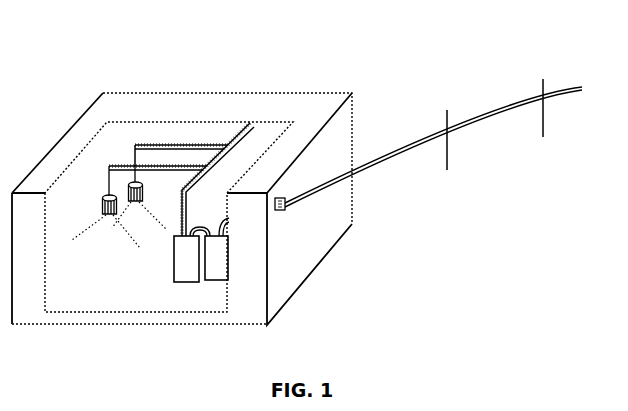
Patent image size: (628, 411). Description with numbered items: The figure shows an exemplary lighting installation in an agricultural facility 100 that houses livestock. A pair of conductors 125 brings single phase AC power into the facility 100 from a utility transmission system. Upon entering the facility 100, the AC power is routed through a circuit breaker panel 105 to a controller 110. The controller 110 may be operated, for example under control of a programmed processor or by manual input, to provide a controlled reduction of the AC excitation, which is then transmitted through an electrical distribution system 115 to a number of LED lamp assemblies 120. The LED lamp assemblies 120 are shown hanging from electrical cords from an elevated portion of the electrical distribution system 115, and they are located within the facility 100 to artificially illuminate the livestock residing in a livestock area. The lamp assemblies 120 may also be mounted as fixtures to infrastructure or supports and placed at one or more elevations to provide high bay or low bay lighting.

The facility 100 is at (93, 56).
The circuit breaker panel 105 is at (213, 277).
The controller 110 is at (182, 272).
The electrical distribution system 115 is at (200, 150).
The LED lamp assemblies 120 is at (105, 215).
The pair of conductors 125 is at (405, 138).